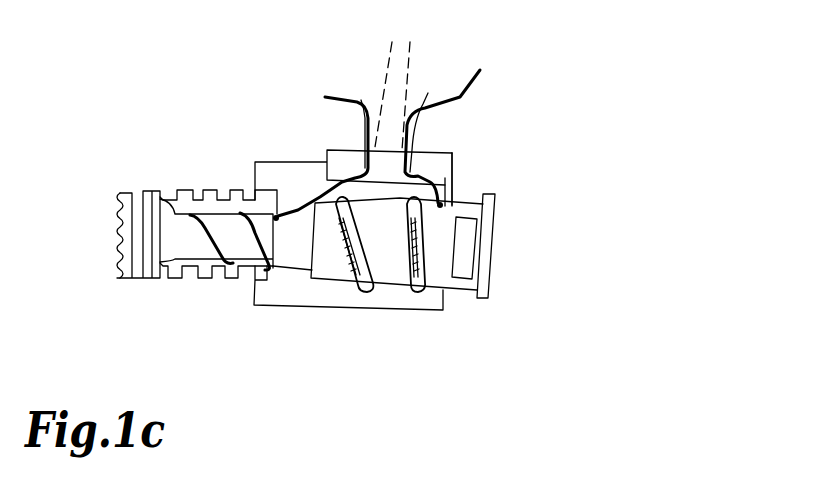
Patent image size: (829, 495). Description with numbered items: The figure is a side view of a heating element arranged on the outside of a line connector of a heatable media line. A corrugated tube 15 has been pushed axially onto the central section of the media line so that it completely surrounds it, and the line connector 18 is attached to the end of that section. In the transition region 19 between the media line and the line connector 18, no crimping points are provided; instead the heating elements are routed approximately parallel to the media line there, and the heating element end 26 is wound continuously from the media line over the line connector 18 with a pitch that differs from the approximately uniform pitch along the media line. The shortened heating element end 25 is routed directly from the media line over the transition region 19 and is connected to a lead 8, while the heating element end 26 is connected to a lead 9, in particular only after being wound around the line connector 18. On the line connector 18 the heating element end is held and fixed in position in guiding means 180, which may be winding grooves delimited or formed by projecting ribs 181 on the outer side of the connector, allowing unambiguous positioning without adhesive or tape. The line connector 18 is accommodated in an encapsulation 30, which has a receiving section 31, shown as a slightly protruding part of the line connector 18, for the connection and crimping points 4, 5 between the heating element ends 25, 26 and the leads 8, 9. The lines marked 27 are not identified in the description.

The corrugated tube 15 is at (188, 192).
The transition region 19 is at (283, 285).
The second line connector 18 is at (342, 273).
The guiding means 180 is at (408, 290).
The projecting ribs 181 is at (420, 277).
The encapsulation 30 is at (452, 191).
The shortened heating element end 25 is at (347, 150).
The heating element end 26 is at (435, 150).
The receiving section 31 is at (452, 160).
The wire 27 is at (388, 134).
The connection and crimping point 4 is at (355, 123).
The connection and crimping point 5 is at (423, 127).
The lead 8 is at (391, 62).
The lead 9 is at (413, 72).